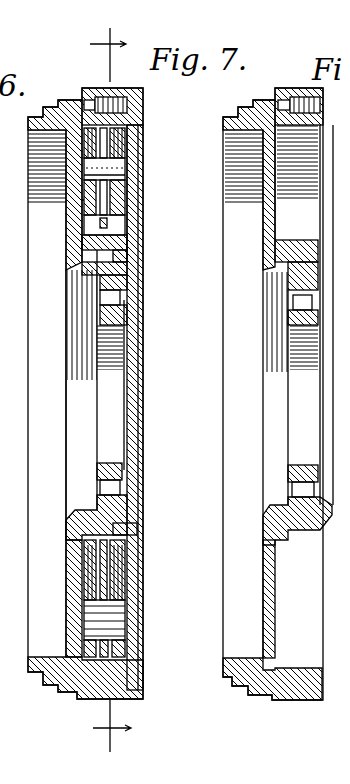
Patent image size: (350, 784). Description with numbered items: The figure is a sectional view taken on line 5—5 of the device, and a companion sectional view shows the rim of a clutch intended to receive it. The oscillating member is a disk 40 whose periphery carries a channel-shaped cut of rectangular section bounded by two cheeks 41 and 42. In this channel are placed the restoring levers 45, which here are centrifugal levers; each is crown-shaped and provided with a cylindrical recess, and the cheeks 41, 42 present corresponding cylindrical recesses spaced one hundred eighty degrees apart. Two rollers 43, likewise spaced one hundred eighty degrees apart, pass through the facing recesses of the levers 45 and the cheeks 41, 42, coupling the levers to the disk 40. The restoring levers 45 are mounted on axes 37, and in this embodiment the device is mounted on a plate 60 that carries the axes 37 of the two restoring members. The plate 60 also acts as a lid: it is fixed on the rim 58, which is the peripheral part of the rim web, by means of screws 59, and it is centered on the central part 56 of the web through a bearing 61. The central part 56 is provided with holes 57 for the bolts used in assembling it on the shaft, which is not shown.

In FIG. 6, the section line 5- 5 is at (110, 386).
In FIG. 6, the axes 37 is at (115, 615).
In FIG. 6, the disk 40 is at (127, 242).
In FIG. 6, the cheek 41 is at (120, 215).
In FIG. 6, the cheek 42 is at (85, 201).
In FIG. 6, the rollers 43 is at (110, 170).
In FIG. 6, the restoring levers 45 is at (126, 136).
In FIG. 6, the central part of the web 56 is at (125, 270).
In FIG. 7, the central part of the web 56 is at (302, 275).
In FIG. 6, the holes 57 is at (110, 300).
In FIG. 7, the holes 57 is at (295, 303).
In FIG. 6, the rim 58 is at (95, 90).
In FIG. 7, the rim 58 is at (320, 89).
In FIG. 6, the screws 59 is at (127, 100).
In FIG. 6, the plate 60 is at (133, 157).
In FIG. 6, the bearing 61 is at (129, 257).